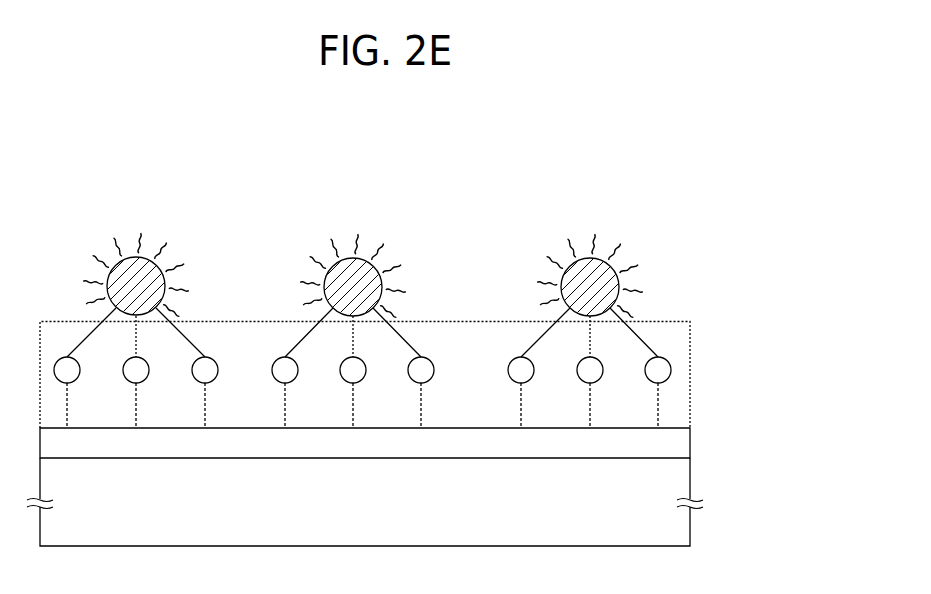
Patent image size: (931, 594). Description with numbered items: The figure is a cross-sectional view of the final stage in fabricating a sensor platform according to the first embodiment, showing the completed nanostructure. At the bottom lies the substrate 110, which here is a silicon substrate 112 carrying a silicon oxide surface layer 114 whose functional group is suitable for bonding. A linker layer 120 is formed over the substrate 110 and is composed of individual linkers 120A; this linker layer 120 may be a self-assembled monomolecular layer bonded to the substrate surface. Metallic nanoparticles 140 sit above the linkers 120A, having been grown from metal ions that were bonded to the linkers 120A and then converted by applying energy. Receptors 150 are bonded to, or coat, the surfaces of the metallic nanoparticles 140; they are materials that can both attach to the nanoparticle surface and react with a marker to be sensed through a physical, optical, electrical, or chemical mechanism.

The substrate 110 is at (411, 484).
The silicon substrate 112 is at (691, 475).
The surface layer 114 is at (691, 435).
The linker layer 120 is at (692, 372).
The linker 120A is at (207, 358).
The metallic nanoparticle 140 is at (380, 259).
The receptor 150 is at (636, 288).